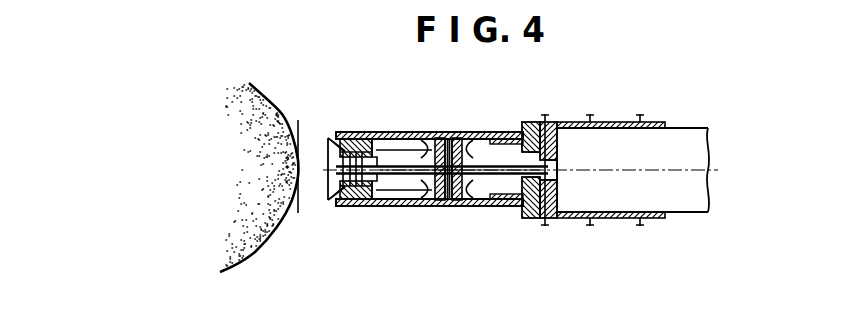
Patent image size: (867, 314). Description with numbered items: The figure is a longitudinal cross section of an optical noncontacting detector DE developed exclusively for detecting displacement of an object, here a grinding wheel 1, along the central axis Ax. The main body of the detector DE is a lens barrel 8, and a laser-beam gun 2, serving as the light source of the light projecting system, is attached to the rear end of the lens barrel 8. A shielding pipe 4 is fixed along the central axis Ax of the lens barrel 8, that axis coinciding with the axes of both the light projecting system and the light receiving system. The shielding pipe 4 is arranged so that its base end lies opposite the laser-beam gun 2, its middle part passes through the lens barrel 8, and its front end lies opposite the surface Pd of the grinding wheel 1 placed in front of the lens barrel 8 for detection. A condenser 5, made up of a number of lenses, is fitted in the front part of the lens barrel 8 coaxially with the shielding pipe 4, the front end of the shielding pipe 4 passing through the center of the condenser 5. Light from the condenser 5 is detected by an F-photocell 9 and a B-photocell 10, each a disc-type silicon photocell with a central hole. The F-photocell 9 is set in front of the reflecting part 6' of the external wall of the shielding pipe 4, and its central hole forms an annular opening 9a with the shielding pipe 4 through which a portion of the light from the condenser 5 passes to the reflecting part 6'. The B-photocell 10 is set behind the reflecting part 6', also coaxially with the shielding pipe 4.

The grinding wheel 1 is at (280, 111).
The laser-beam gun 2 is at (684, 128).
The shielding pipe 4 is at (388, 150).
The condenser 5 is at (343, 139).
The reflecting part of the external wall of the shielding pipe 6' is at (455, 148).
The lens barrel 8 is at (488, 134).
The F-photocell 9 is at (420, 206).
The annular opening 9a is at (427, 140).
The B-photocell 10 is at (468, 208).
The detector DE is at (552, 222).
The surface of the grinding wheel Pd is at (298, 213).
The central axis Ax is at (708, 163).